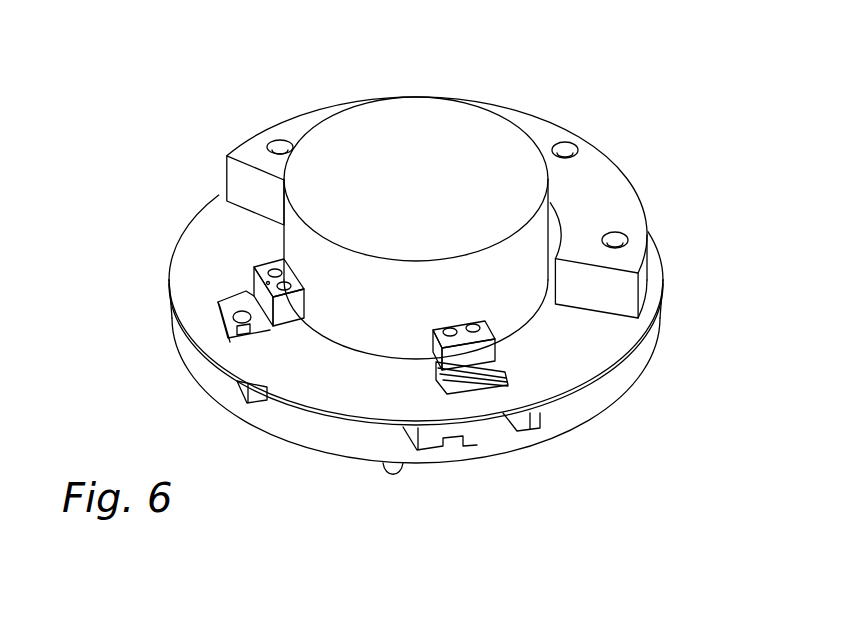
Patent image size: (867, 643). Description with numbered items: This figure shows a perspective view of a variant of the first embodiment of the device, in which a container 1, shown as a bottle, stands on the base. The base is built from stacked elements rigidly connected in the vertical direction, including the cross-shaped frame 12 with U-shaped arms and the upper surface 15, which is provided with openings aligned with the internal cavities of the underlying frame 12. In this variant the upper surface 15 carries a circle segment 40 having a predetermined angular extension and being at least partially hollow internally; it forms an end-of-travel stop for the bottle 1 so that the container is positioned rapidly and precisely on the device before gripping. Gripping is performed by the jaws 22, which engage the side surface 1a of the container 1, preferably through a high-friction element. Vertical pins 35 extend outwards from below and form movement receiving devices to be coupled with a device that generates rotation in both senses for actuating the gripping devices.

The container 1 is at (458, 152).
The side surface of the container 1a is at (520, 296).
The upper surface 15 is at (207, 240).
The circle segment 40 is at (614, 203).
The cross-shaped frame 12 is at (538, 413).
The jaw 22 is at (250, 266).
The vertical pins 35 is at (390, 470).